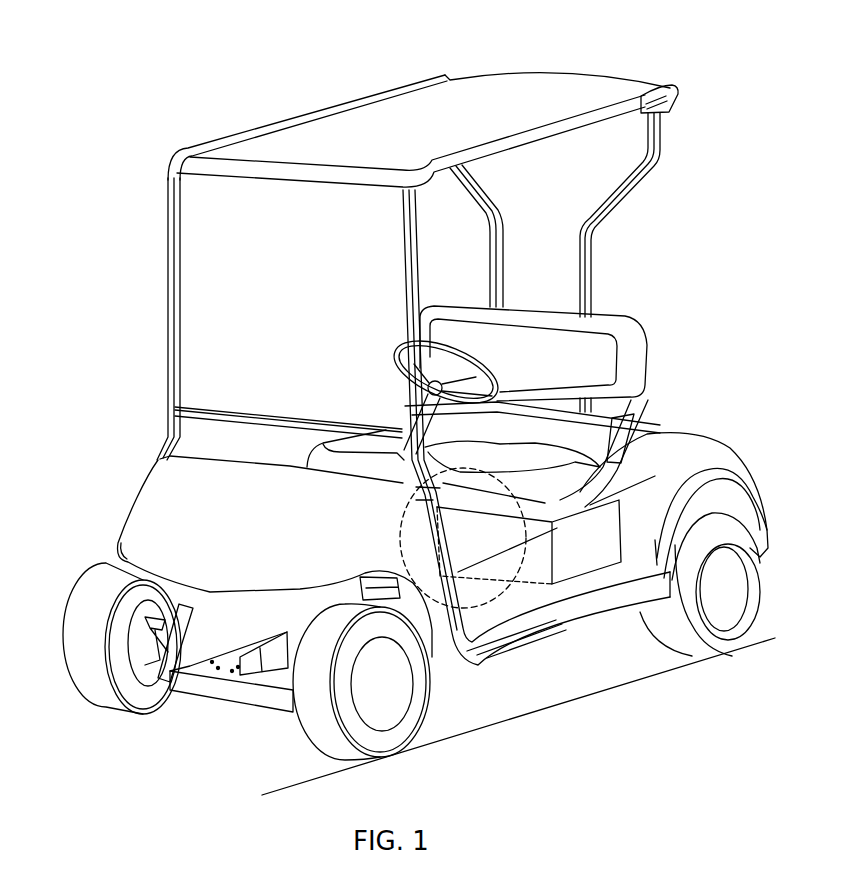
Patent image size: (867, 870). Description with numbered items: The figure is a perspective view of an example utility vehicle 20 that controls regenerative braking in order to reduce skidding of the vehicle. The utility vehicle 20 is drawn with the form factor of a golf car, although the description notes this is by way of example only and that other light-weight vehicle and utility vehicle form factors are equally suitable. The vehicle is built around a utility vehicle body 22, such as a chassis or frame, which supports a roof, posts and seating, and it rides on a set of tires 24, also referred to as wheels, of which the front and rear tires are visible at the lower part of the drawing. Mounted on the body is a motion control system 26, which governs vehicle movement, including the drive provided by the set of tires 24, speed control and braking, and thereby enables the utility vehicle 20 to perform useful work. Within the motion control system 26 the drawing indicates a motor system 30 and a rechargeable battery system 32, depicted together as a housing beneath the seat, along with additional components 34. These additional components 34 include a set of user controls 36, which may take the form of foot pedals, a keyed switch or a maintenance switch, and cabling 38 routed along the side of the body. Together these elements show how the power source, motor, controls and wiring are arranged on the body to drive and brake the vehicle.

The utility vehicle 20 is at (86, 53).
The utility vehicle body 22 is at (288, 87).
The set of tires 24 is at (68, 521).
The motion control system 26 is at (282, 311).
The motor system 30 is at (586, 557).
The rechargeable battery system 32 is at (614, 557).
The additional components 34 is at (369, 408).
The set of user controls 36 is at (369, 558).
The cabling 38 is at (533, 630).